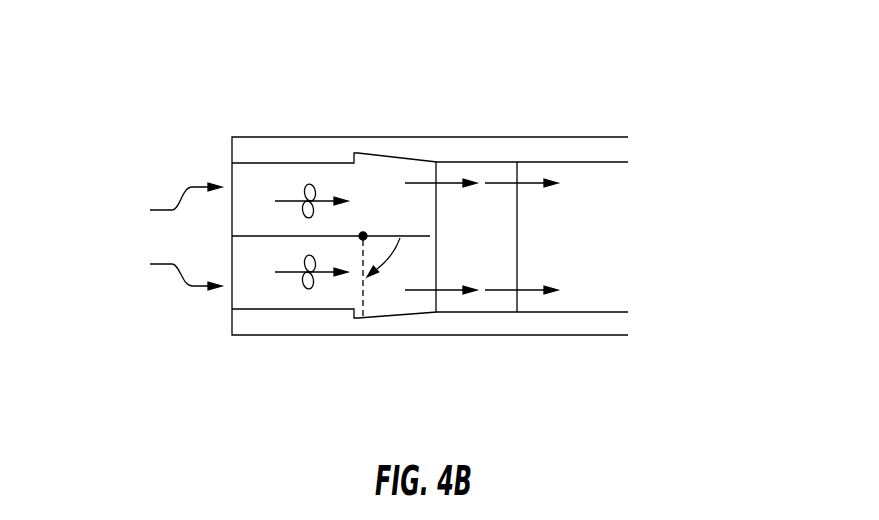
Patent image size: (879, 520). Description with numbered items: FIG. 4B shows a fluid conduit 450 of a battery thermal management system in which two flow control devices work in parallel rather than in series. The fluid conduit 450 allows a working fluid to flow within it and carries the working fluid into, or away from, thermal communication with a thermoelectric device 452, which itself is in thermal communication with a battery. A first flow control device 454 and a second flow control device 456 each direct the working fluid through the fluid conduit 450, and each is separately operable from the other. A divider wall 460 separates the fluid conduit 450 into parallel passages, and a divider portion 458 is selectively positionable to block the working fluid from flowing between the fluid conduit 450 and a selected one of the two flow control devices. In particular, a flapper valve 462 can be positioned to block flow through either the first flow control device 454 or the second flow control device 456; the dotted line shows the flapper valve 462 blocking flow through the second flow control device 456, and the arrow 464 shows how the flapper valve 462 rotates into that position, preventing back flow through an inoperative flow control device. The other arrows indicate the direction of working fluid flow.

The fluid conduit 450 is at (268, 175).
The thermoelectric device 452 is at (498, 300).
The first flow control device 454 is at (307, 183).
The second flow control device 456 is at (304, 292).
The divider portion 458 is at (376, 192).
The divider wall 460 is at (232, 219).
The flapper valve 462 is at (415, 240).
The arrow 464 is at (400, 240).